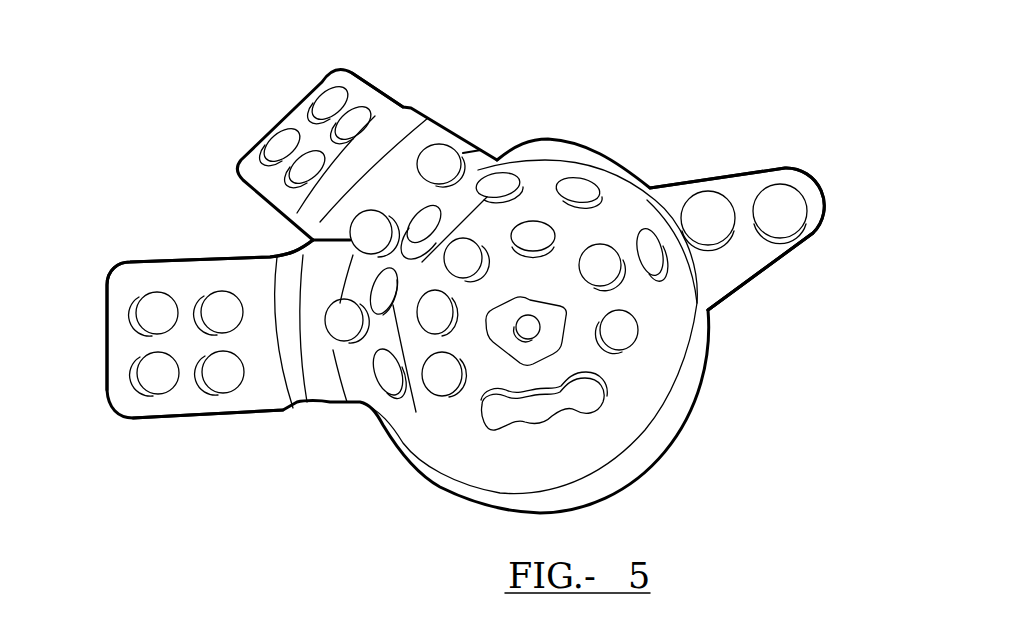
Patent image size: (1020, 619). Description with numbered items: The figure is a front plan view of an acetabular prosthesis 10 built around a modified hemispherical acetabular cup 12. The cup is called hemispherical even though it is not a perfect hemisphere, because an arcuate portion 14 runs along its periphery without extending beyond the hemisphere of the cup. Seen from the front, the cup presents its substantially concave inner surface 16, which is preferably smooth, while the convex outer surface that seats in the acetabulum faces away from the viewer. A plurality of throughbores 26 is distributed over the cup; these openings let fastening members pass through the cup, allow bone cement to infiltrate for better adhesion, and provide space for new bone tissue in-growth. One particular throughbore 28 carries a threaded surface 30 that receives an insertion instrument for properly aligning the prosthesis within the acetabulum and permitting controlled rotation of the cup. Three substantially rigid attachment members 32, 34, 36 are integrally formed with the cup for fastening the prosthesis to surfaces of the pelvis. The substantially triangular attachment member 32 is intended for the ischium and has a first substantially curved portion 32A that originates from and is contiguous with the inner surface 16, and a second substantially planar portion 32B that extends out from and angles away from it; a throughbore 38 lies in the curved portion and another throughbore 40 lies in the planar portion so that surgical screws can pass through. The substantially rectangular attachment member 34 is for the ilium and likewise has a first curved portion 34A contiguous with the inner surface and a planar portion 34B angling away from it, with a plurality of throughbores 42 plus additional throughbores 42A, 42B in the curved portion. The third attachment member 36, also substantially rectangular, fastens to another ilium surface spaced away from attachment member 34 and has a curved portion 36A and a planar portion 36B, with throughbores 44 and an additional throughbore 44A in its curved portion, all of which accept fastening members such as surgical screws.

The acetabular prosthesis 10 is at (675, 86).
The acetabular cup 12 is at (648, 481).
The arcuate portion 14 is at (394, 440).
The inner surface 16 is at (632, 374).
The throughbores 26 is at (428, 240).
The throughbore 28 is at (548, 322).
The threaded surface 30 is at (526, 327).
The attachment member 32 is at (832, 186).
The first curved portion 32A is at (708, 310).
The second planar portion 32B is at (797, 250).
The attachment member 34 is at (342, 62).
The first curved portion 34A is at (418, 107).
The second planar portion 34B is at (378, 88).
The attachment member 36 is at (100, 390).
The first curved portion 36A is at (293, 410).
The second planar portion 36B is at (201, 419).
The throughbore 38 is at (705, 218).
The throughbore 40 is at (779, 210).
The throughbores 42 is at (305, 156).
The throughbore 42A is at (310, 239).
The throughbore 42B is at (500, 157).
The throughbores 44 is at (222, 347).
The throughbore 44A is at (343, 404).